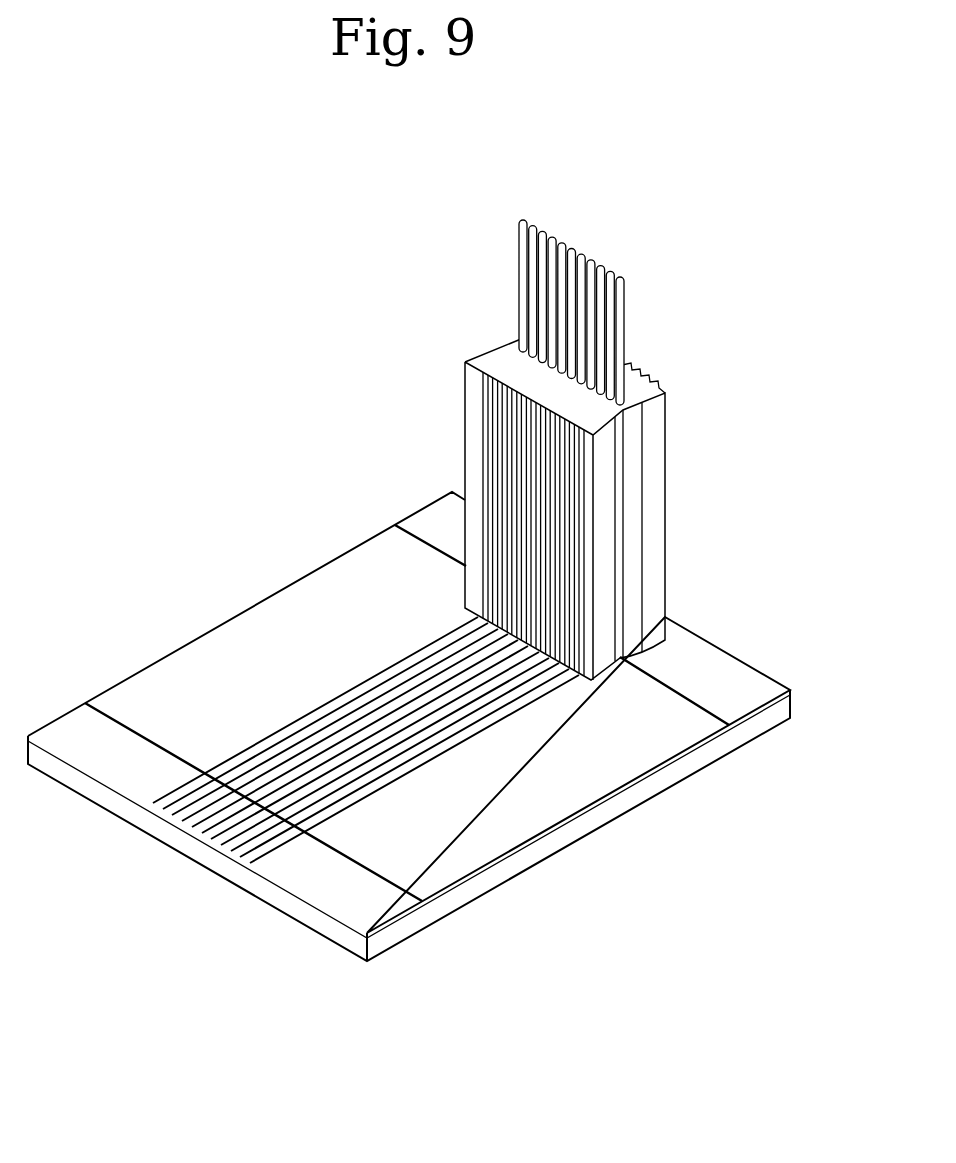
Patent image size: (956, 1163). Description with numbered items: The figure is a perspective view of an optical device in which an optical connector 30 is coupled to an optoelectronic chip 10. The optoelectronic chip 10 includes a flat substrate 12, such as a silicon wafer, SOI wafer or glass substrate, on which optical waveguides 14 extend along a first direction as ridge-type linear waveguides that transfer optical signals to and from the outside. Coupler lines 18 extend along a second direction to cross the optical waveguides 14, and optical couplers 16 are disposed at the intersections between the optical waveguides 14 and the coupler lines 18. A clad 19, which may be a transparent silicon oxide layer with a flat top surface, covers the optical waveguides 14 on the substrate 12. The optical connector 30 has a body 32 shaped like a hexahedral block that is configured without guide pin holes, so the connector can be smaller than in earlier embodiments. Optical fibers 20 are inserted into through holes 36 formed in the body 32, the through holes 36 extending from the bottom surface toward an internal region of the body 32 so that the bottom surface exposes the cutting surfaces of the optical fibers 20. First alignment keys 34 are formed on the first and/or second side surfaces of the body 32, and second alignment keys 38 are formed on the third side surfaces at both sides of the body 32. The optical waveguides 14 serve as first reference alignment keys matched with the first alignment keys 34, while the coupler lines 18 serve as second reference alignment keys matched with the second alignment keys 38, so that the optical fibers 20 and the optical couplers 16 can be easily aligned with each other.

The optoelectronic chip 10 is at (409, 726).
The substrate 12 is at (587, 822).
The optical waveguides 14 is at (303, 828).
The optical couplers 16 is at (417, 765).
The coupler lines 18 is at (432, 889).
The clad 19 is at (628, 787).
The optical fibers 20 is at (575, 253).
The optical connector 30 is at (638, 509).
The body 32 is at (630, 380).
The first alignment keys 34 is at (579, 462).
The through holes 36 is at (616, 387).
The second alignment keys 38 is at (624, 515).